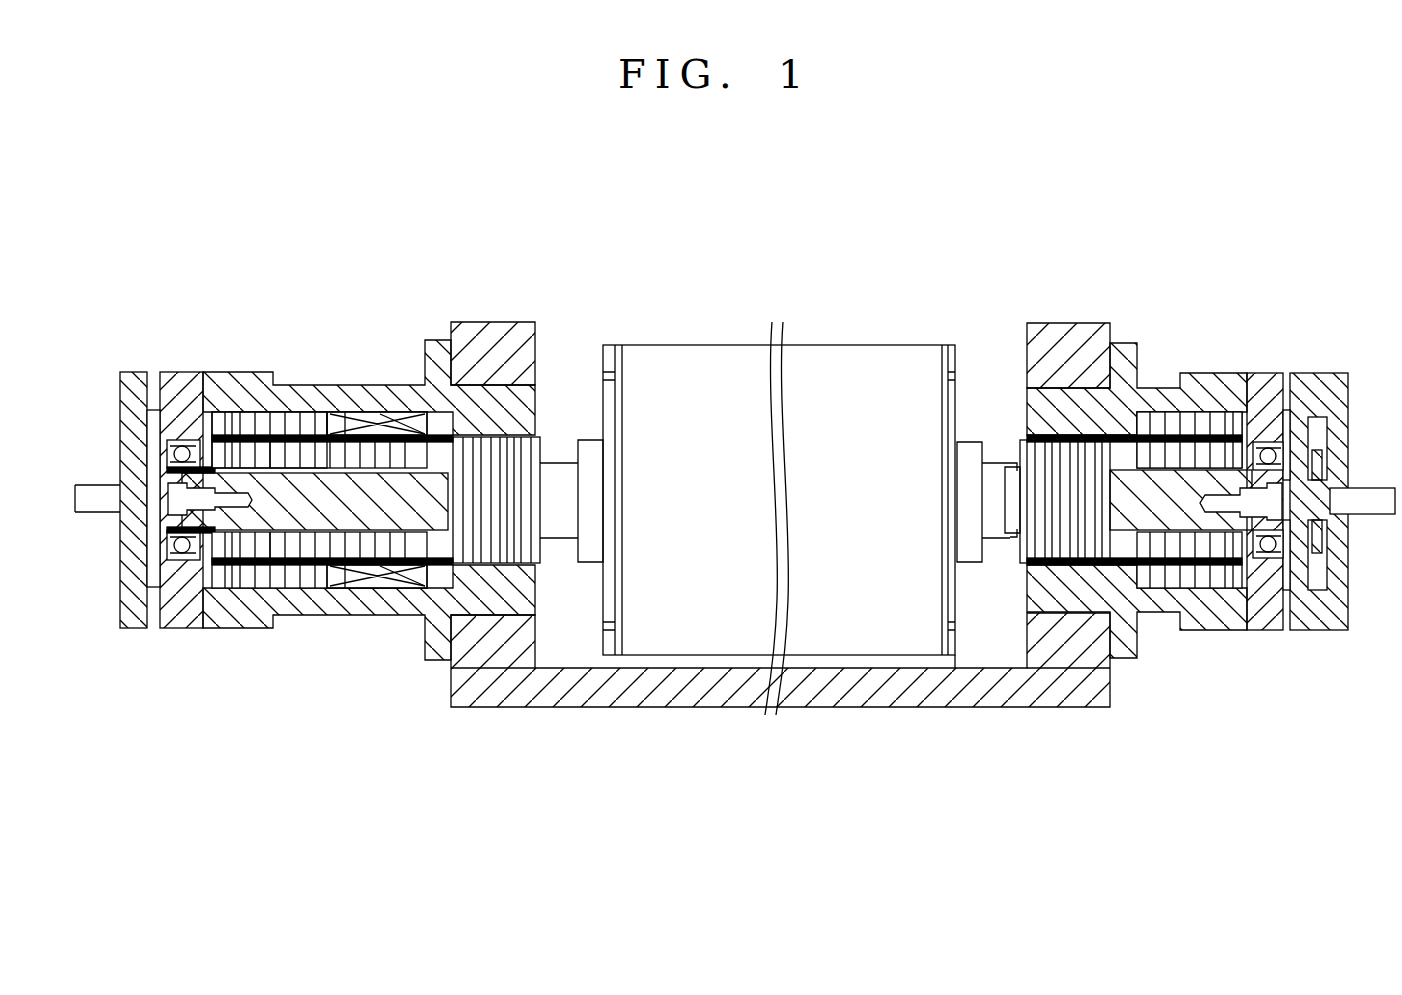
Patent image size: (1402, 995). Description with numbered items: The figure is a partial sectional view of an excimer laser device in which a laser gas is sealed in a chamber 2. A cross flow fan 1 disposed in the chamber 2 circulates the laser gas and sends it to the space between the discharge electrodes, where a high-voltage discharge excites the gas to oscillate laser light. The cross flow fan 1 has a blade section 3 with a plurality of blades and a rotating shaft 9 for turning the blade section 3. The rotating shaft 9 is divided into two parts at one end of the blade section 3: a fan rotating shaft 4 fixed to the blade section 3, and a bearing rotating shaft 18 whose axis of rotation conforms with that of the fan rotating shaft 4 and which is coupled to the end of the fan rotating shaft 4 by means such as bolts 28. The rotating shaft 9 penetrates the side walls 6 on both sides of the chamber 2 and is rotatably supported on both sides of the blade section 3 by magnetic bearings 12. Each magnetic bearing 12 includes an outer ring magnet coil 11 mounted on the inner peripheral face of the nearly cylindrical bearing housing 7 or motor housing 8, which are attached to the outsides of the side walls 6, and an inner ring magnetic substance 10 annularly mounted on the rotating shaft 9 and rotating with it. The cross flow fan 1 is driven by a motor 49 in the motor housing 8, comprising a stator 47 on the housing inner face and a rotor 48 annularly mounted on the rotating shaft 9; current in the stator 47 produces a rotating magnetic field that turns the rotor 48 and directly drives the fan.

The cross flow fan 1 is at (797, 315).
The chamber 2 is at (1065, 330).
The blade section 3 is at (863, 353).
The fan rotating shaft 4 is at (968, 440).
The side wall 6 is at (452, 697).
The bearing housing 7 is at (1237, 280).
The motor housing 8 is at (312, 281).
The rotating shaft 9 is at (955, 288).
The inner ring magnetic substance 10 is at (277, 436).
The outer ring magnet coil 11 is at (258, 418).
The magnetic bearing 12 is at (232, 297).
The bearing rotating shaft 18 is at (1047, 433).
The bolt 28 is at (1003, 468).
The stator 47 is at (372, 420).
The rotor 48 is at (352, 422).
The motor 49 is at (407, 303).